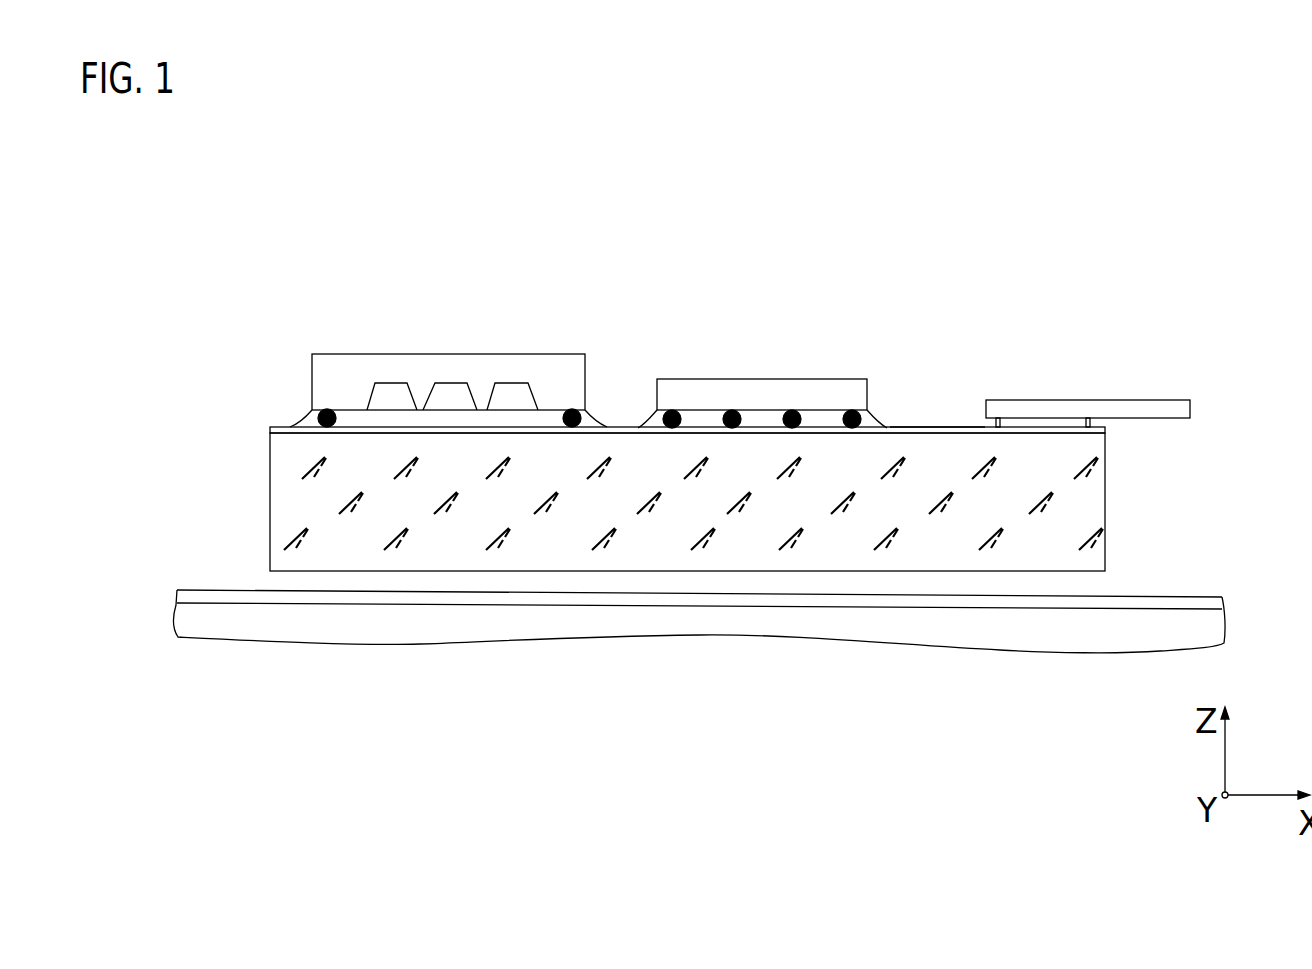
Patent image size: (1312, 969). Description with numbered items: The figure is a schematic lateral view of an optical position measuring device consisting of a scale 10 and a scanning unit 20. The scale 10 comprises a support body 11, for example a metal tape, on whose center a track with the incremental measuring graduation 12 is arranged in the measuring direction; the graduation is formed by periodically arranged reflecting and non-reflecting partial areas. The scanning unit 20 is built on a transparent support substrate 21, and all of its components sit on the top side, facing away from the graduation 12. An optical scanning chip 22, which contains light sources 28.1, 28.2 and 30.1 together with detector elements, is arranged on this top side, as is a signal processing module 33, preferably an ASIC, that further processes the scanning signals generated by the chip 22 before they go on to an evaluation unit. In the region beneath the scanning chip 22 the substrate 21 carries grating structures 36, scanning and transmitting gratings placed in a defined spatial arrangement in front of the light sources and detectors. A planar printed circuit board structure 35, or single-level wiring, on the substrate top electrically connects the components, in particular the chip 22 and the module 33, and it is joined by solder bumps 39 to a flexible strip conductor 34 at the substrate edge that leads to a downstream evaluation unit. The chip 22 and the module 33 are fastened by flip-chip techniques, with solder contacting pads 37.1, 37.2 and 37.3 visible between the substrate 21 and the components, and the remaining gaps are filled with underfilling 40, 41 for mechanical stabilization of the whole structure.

The scale 10 is at (672, 665).
The support body 11 is at (458, 620).
The incremental measuring graduation 12 is at (592, 600).
The scanning unit 20 is at (661, 404).
The support substrate 21 is at (1088, 505).
The optical scanning chip 22 is at (380, 323).
The light source 28.1 is at (392, 393).
The light source 28.2 is at (513, 395).
The light source 30.1 is at (450, 395).
The signal processing module 33 is at (770, 333).
The flexible strip conductor 34 is at (1093, 396).
The planar printed circuit board structure 35 is at (947, 428).
The grating structures 36 is at (543, 430).
The contacting pad 37.1 is at (318, 411).
The contacting pad 37.2 is at (587, 413).
The contacting pad 37.3 is at (688, 415).
The solder bumps 39 is at (1100, 421).
The underfilling 40 is at (350, 415).
The underfilling 41 is at (872, 420).